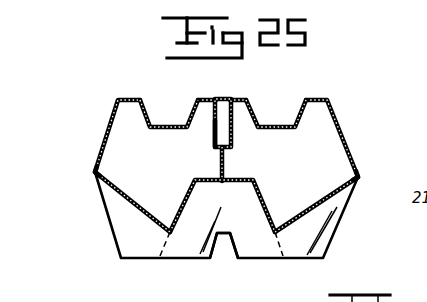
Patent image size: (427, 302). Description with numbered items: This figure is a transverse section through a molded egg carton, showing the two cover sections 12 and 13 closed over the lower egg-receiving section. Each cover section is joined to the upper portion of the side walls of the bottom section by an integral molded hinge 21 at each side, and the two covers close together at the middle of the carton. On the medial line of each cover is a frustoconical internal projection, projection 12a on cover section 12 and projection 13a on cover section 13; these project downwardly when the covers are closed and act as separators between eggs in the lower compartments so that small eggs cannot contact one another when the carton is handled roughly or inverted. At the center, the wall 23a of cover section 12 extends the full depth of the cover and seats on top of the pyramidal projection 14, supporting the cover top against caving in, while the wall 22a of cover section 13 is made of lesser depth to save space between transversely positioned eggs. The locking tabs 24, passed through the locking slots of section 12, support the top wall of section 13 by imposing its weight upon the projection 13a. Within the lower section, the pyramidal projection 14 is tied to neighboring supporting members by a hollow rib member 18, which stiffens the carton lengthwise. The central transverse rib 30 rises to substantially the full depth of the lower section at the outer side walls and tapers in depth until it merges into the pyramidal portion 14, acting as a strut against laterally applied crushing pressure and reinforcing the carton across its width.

The cover section 12 is at (340, 132).
The internal projection 12a is at (280, 108).
The cover section 13 is at (113, 111).
The internal projection 13a is at (168, 112).
The pyramidal projection 14 is at (261, 197).
The hollow rib member 18 is at (234, 245).
The hinge 21 is at (93, 168).
The wall 22a is at (231, 132).
The wall 23a is at (226, 168).
The locking tab 24 is at (215, 135).
The central rib 30 is at (132, 202).